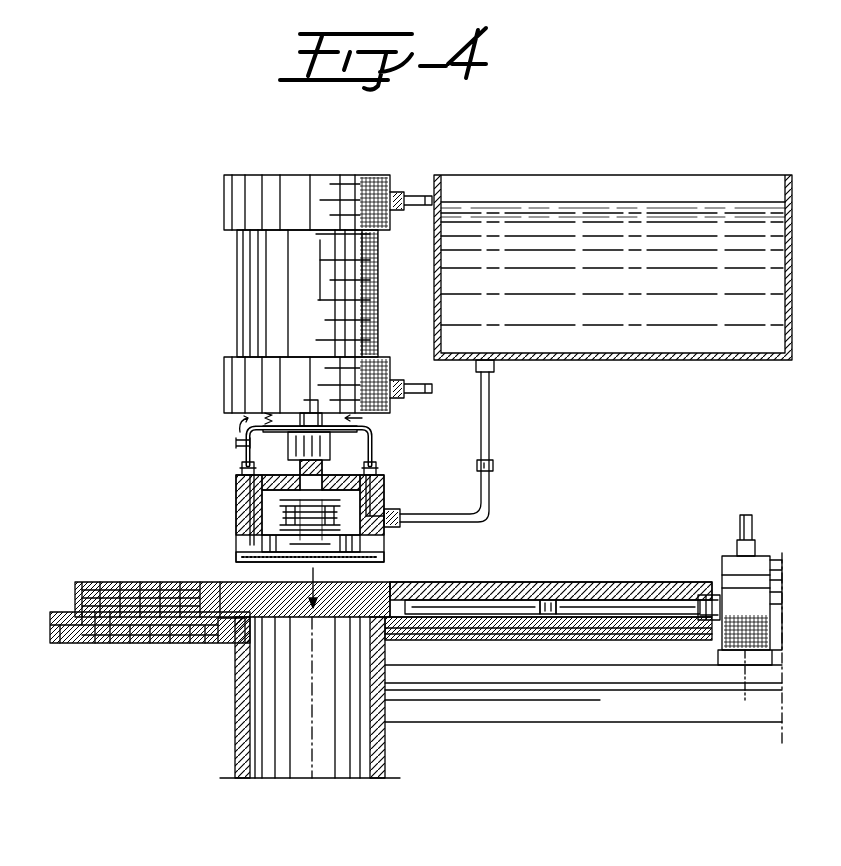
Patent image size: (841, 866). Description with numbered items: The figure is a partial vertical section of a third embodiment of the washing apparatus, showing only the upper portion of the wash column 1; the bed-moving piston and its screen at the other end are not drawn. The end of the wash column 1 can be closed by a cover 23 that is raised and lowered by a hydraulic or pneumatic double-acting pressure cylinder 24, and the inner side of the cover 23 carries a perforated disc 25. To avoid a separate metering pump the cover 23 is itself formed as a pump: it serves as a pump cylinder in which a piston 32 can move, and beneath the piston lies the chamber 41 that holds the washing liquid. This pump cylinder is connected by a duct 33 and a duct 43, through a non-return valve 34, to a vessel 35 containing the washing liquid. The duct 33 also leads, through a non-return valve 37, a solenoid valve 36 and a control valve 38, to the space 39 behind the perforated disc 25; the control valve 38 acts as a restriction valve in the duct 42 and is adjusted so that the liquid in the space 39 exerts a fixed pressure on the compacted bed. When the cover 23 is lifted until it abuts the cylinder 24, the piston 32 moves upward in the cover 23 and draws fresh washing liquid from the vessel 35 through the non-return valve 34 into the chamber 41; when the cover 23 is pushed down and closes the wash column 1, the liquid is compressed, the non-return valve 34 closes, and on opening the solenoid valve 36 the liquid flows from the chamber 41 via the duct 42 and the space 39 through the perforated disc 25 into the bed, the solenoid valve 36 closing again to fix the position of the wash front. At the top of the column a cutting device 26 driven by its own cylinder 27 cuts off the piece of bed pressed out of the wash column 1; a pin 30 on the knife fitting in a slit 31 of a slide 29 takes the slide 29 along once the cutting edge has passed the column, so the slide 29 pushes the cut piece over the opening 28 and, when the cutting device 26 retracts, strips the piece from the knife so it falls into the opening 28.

The wash column 1 is at (235, 712).
The cover 23 is at (243, 492).
The pressure cylinder 24 is at (280, 284).
The perforated disc 25 is at (290, 562).
The cutting device 26 is at (604, 612).
The cylinder 27 is at (745, 585).
The opening 28 is at (172, 630).
The slide 29 is at (485, 582).
The pin 30 is at (545, 604).
The slit 31 is at (449, 607).
The piston 32 is at (240, 516).
The duct 33 is at (372, 537).
The non-return valve 34 is at (490, 466).
The vessel 35 is at (551, 312).
The solenoid valve 36 is at (265, 416).
The non-return valve 37 is at (372, 431).
The control valve 38 is at (245, 443).
The space 39 is at (262, 547).
The chamber 41 is at (385, 496).
The duct 42 is at (378, 452).
The duct 43 is at (489, 494).